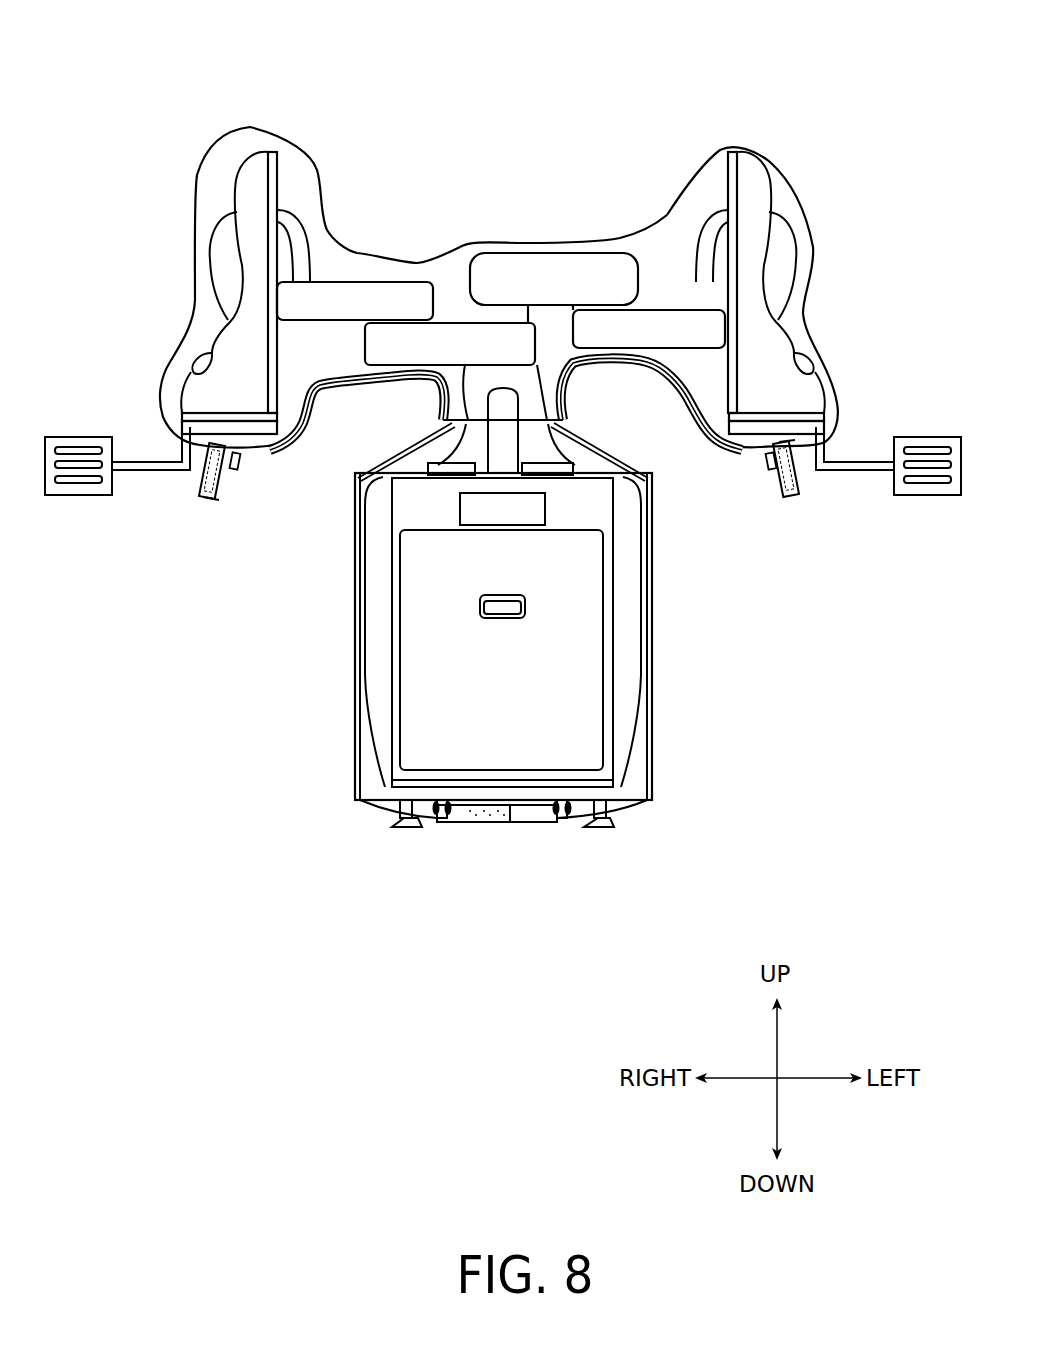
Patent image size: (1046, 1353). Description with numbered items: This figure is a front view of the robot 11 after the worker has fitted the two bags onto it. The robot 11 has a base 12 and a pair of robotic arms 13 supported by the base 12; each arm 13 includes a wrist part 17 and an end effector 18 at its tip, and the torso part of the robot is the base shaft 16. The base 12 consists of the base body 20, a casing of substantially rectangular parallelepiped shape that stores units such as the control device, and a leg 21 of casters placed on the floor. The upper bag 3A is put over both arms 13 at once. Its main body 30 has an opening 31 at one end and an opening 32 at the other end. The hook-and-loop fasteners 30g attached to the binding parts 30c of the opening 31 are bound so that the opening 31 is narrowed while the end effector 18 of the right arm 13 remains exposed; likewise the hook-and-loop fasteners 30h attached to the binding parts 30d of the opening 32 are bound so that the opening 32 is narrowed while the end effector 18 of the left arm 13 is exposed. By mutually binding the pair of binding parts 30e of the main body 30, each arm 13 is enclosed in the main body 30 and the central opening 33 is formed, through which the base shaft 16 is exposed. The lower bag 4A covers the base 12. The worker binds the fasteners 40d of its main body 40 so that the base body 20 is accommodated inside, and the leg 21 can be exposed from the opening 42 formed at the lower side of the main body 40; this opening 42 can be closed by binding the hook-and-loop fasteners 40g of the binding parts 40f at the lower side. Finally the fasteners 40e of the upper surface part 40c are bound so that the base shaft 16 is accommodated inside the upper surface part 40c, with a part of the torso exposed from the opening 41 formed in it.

The robot 11 is at (692, 120).
The robotic arm 13 is at (268, 151).
The bag 3A is at (466, 243).
The main body 30 is at (375, 255).
The wrist part 17 is at (220, 342).
The end effector 18 is at (80, 437).
The opening 31 is at (170, 432).
The opening 32 is at (858, 443).
The binding part 30e is at (375, 390).
The opening 33 is at (448, 413).
The base shaft 16 is at (552, 427).
The opening 41 is at (357, 500).
The fastener 40e is at (363, 460).
The upper surface part 40c is at (583, 451).
The main body 40 is at (653, 546).
The bag 4A is at (356, 650).
The fastener 40d is at (653, 590).
The base 12 is at (641, 621).
The base body 20 is at (648, 668).
The leg 21 is at (616, 815).
The binding part 40f is at (522, 823).
The hook-and-loop fastener 40g is at (487, 828).
The opening 42 is at (538, 806).
The binding part 30c is at (223, 483).
The hook-and-loop fastener 30g is at (208, 494).
The hook-and-loop fastener 30h is at (780, 494).
The binding part 30d is at (792, 445).